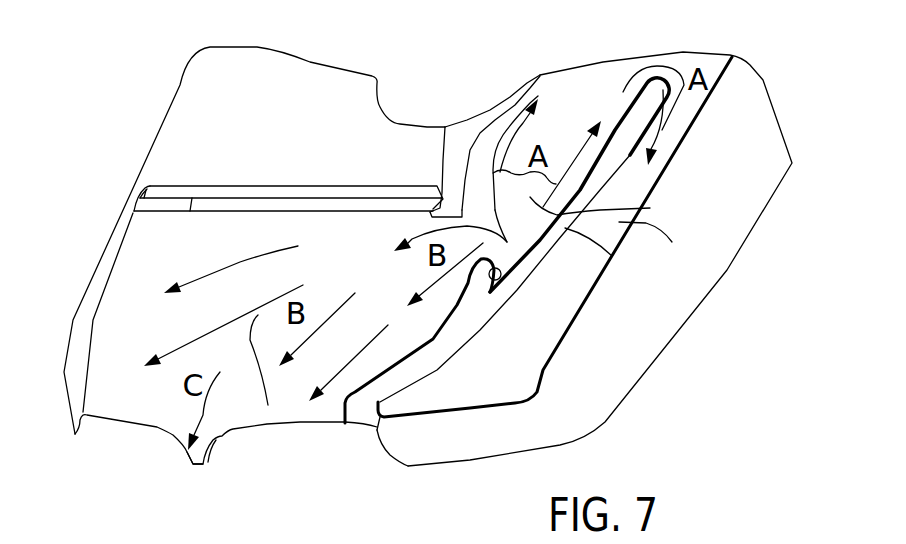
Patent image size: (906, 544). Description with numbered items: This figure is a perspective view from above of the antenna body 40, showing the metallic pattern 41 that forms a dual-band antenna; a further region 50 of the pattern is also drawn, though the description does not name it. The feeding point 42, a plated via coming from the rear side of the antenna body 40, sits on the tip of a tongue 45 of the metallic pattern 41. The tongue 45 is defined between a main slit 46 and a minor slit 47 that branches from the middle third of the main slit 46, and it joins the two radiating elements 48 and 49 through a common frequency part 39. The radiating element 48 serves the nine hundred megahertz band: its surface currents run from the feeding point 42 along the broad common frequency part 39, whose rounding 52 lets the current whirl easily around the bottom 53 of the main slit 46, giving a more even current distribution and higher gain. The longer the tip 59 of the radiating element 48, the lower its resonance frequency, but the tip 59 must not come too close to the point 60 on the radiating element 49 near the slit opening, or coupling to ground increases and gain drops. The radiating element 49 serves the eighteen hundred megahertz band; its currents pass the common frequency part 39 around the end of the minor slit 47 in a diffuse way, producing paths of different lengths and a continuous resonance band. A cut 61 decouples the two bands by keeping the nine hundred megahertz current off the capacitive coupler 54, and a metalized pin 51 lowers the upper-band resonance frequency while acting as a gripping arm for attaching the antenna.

The antenna body 40 is at (145, 92).
The metallic pattern 41 is at (268, 405).
The feeding point 42 is at (500, 282).
The tongue 45 is at (488, 296).
The main slit 46 is at (612, 256).
The minor slit 47 is at (465, 280).
The radiating element 48 is at (708, 281).
The radiating element 49 is at (138, 315).
The upper portion 50 is at (589, 80).
The metalized pin 51 is at (193, 465).
The rounding 52 is at (485, 137).
The bottom of the slit 53 is at (660, 80).
The capacitive 1800 MHz coupler 54 is at (325, 212).
The tip 59 is at (377, 430).
The point 60 is at (322, 404).
The cut 61 is at (448, 208).
The common frequency part 39 is at (650, 208).